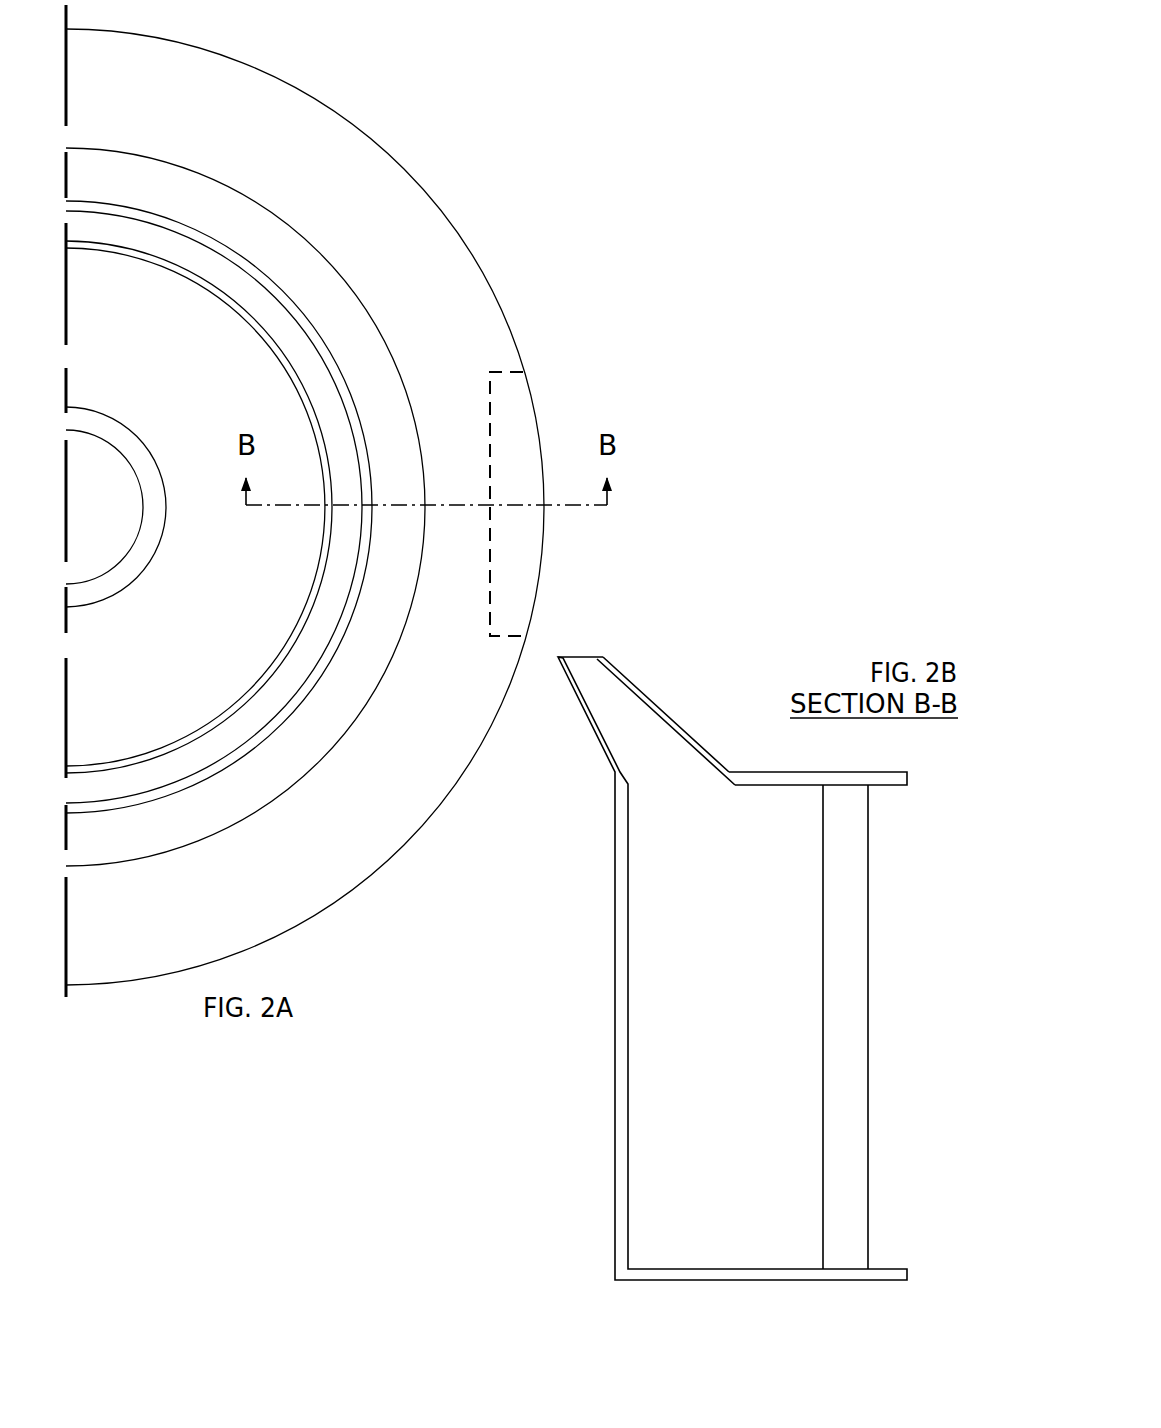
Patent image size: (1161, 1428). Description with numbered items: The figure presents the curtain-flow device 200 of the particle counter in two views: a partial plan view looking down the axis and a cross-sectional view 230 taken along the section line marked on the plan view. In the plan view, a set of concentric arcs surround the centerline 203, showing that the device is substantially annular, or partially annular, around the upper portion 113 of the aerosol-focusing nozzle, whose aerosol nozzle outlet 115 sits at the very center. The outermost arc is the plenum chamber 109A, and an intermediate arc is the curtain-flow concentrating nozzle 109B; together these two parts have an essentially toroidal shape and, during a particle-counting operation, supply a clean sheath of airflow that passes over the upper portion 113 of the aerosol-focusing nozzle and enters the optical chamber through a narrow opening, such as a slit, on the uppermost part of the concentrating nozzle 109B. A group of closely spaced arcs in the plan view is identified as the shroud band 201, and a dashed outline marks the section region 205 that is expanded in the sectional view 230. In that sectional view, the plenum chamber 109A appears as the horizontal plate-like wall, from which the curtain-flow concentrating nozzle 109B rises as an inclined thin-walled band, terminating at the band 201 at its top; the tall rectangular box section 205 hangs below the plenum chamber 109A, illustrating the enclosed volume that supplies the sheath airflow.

In FIG. 2A, the turbine nozzle assembly 200 is at (478, 172).
In FIG. 2A, the shroud band 201 is at (112, 232).
In FIG. 2B, the shroud band 201 is at (745, 691).
In FIG. 2A, the centerline axis 203 is at (68, 952).
In FIG. 2A, the box section 205 is at (558, 418).
In FIG. 2B, the box section 205 is at (925, 950).
In FIG. 2A, the plenum chamber 109A is at (310, 120).
In FIG. 2B, the plenum chamber 109A is at (772, 772).
In FIG. 2A, the curtain-flow concentrating nozzle 109B is at (360, 334).
In FIG. 2B, the curtain-flow concentrating nozzle 109B is at (653, 692).
In FIG. 2A, the upper portion 113 is at (214, 637).
In FIG. 2A, the aerosol nozzle outlet 115 is at (95, 460).
In FIG. 2B, the section view 230 is at (711, 938).